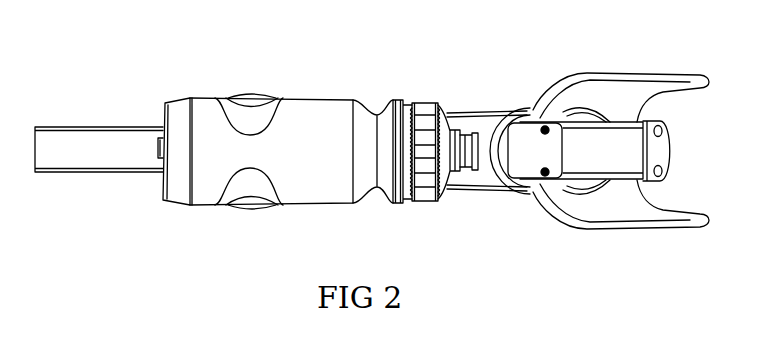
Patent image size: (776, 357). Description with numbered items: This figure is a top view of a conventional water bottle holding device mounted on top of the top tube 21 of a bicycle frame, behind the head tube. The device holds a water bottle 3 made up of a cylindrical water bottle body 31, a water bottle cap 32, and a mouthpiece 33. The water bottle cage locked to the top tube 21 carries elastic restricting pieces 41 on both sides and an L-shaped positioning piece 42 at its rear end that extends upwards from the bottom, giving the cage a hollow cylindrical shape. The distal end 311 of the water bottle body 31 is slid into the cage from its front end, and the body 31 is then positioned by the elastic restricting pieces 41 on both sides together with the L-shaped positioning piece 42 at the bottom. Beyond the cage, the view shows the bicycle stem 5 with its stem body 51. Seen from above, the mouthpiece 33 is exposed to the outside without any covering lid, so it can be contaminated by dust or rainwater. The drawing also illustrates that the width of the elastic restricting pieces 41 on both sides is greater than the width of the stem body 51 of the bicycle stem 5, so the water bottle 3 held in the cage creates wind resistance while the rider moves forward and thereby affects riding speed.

The water bottle 3 is at (281, 134).
The top tube 21 is at (105, 145).
The water bottle body 31 is at (322, 190).
The distal end 311 is at (162, 180).
The water bottle cap 32 is at (420, 202).
The mouthpiece 33 is at (457, 170).
The elastic restricting pieces 41 is at (227, 98).
The L-shaped positioning piece 42 is at (160, 152).
The bicycle stem 5 is at (608, 173).
The stem body 51 is at (592, 157).